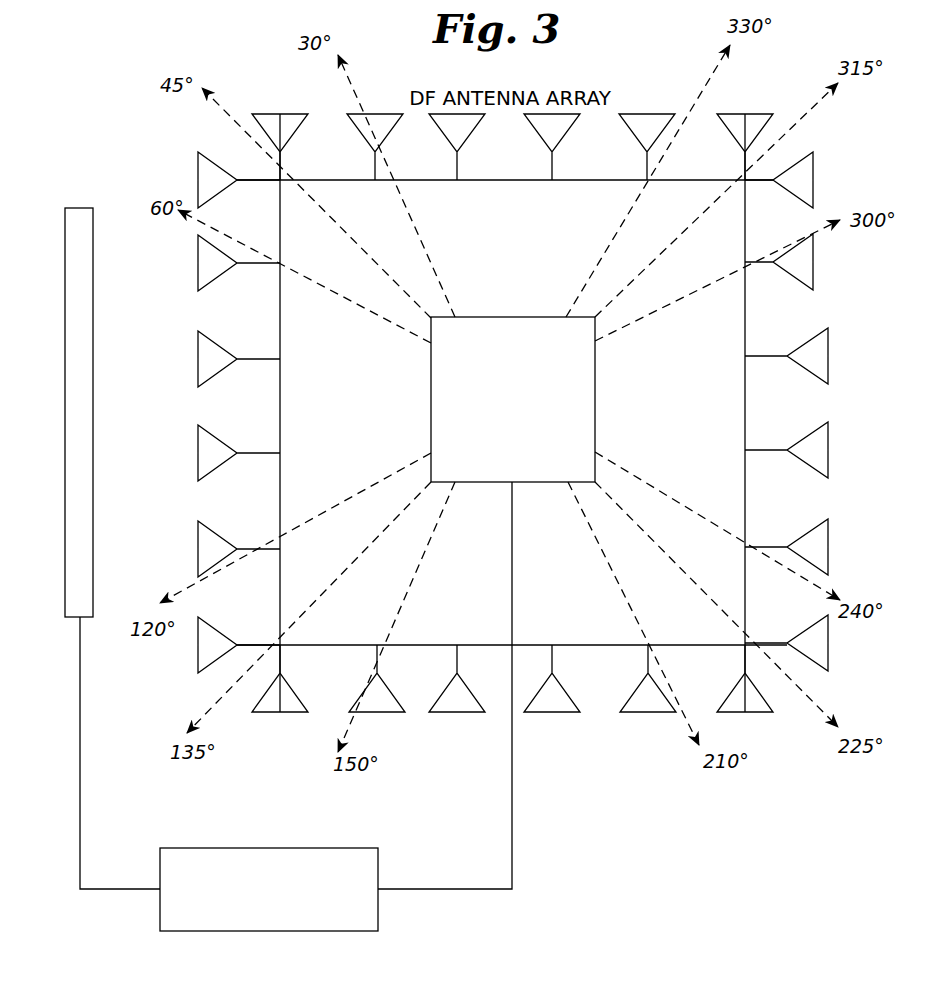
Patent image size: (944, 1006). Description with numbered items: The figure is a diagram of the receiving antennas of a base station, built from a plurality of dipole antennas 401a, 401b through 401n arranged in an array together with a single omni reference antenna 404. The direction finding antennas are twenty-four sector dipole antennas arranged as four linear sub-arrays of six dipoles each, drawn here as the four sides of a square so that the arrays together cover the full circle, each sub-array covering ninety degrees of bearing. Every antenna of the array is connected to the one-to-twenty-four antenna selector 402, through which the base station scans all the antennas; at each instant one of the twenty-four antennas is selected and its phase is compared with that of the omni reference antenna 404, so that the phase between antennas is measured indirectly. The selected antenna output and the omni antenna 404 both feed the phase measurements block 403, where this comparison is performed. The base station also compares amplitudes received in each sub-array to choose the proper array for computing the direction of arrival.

The dipole antenna 401a is at (893, 305).
The dipole antenna 401b is at (893, 405).
The dipole antenna 401n is at (542, 713).
The 1:24 antenna selector 402 is at (527, 317).
The phase measurements unit 403 is at (237, 931).
The omni reference antenna 404 is at (95, 290).